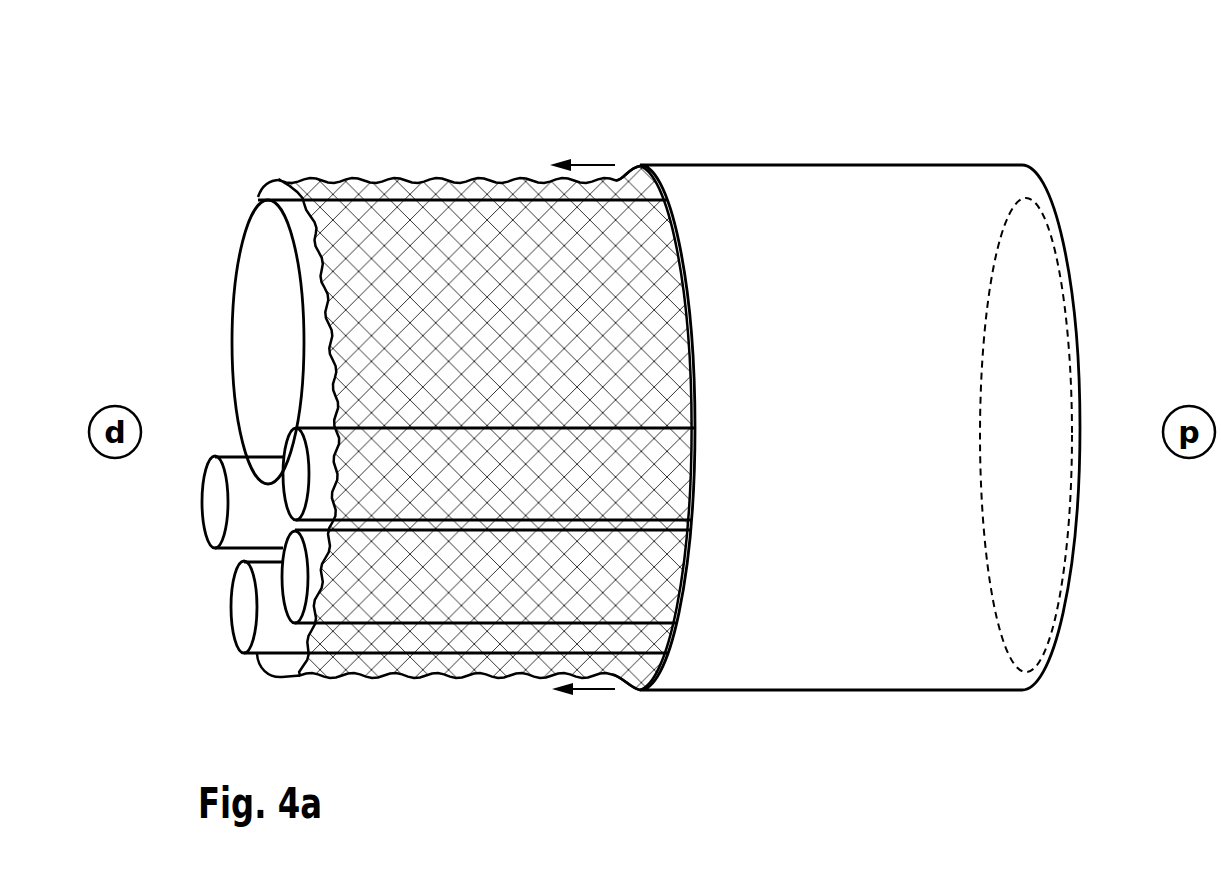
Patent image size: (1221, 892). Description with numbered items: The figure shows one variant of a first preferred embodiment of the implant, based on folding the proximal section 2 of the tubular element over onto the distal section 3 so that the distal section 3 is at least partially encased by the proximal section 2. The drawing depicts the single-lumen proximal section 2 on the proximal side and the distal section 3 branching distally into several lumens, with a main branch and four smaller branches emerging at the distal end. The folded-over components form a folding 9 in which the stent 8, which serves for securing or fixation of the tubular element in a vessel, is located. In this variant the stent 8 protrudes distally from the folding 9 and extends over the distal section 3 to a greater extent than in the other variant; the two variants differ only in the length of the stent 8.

The proximal section 2 is at (848, 154).
The distal section 3 is at (430, 170).
The stent 8 is at (490, 676).
The folding 9 is at (632, 687).